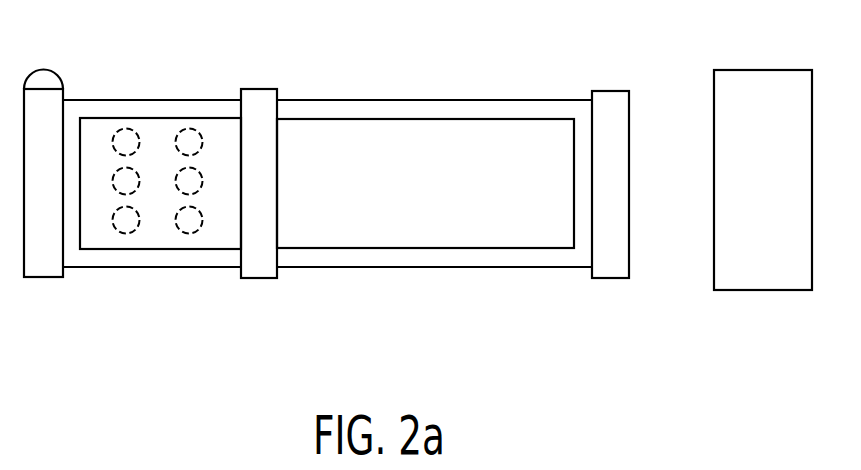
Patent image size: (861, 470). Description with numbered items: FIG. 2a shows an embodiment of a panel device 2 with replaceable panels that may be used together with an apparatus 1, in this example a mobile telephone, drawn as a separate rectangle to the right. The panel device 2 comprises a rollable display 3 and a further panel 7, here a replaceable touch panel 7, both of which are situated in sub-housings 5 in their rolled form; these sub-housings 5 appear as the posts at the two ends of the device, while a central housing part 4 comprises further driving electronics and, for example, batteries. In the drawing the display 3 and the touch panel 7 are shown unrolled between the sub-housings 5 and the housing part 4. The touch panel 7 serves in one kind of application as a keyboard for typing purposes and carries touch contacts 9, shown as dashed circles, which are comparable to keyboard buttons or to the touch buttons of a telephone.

The apparatus 1 is at (760, 80).
The panel device 2 is at (130, 292).
The rollable display 3 is at (400, 132).
The housing part 4 is at (261, 88).
The sub-housing 5 is at (44, 75).
The touch panel 7 is at (152, 145).
The touch contacts 9 is at (188, 138).